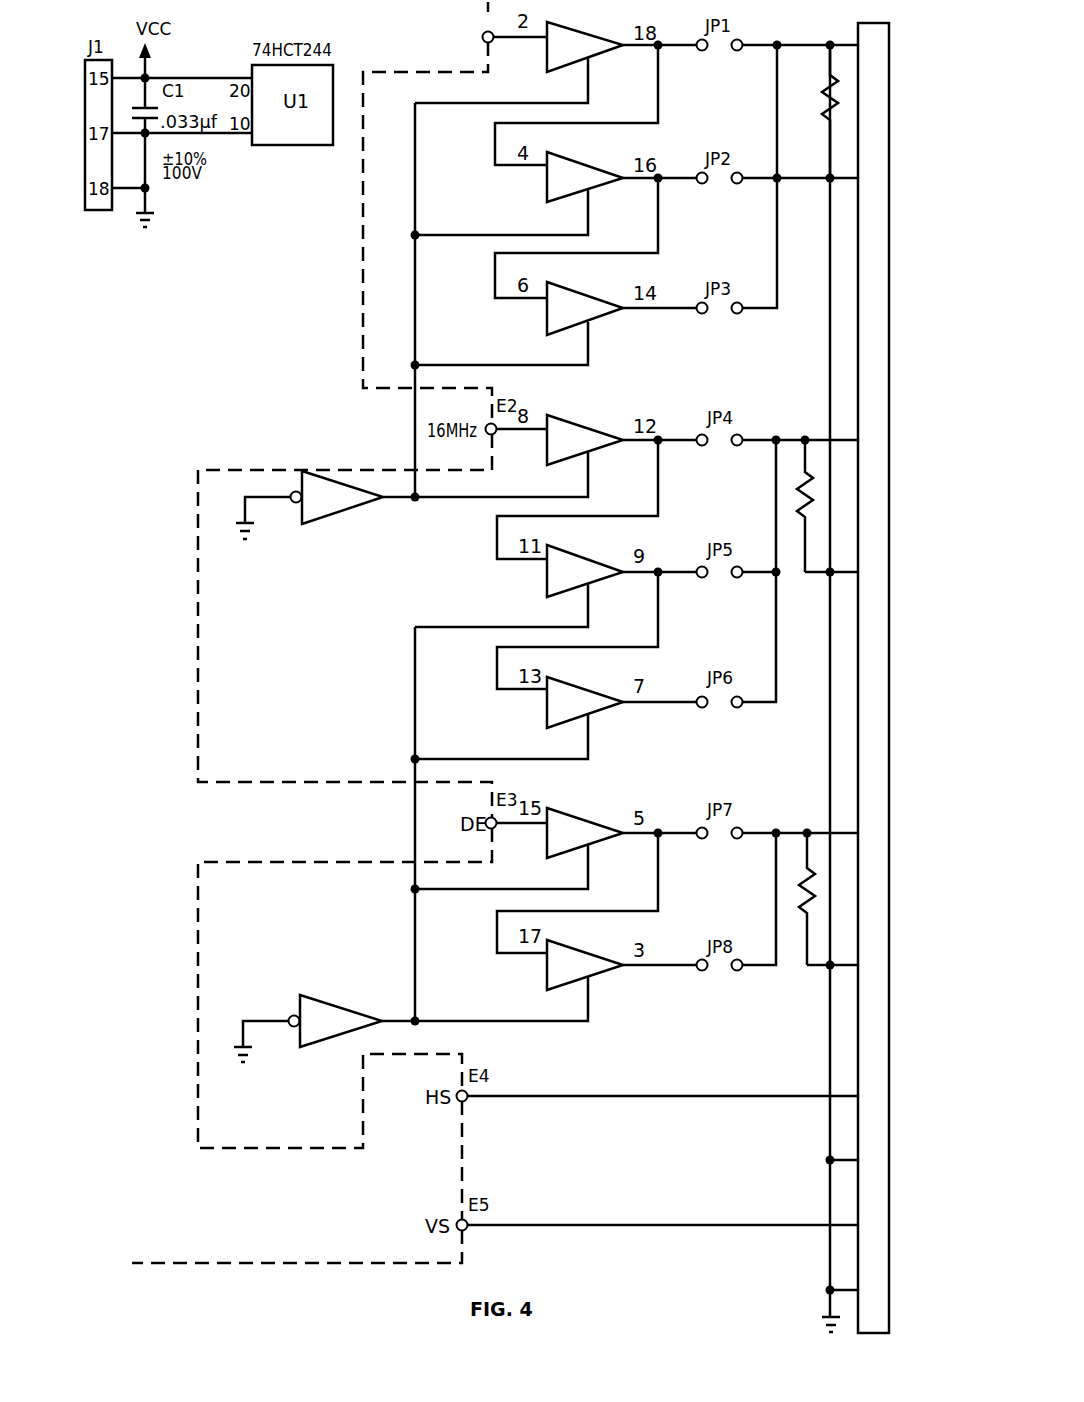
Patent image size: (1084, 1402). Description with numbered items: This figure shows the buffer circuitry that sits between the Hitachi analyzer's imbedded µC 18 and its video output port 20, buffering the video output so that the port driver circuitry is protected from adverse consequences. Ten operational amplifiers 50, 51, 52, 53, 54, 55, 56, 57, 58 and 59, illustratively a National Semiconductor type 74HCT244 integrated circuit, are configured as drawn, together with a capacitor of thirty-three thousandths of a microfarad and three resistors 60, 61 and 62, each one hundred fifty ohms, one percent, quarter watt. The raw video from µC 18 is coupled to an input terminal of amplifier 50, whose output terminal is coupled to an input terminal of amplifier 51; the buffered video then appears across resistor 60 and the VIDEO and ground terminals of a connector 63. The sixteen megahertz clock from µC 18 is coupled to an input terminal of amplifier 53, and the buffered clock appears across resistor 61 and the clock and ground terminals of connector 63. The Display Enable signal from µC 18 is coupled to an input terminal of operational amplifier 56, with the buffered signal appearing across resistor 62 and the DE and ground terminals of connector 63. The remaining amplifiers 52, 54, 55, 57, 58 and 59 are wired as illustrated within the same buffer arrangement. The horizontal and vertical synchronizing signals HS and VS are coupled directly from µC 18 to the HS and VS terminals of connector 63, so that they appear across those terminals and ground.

The imbedded µC 18 is at (228, 392).
The video output port 20 is at (427, 18).
The operational amplifier 50 is at (573, 30).
The operational amplifier 51 is at (578, 163).
The operational amplifier 52 is at (578, 293).
The operational amplifier 53 is at (576, 425).
The operational amplifier 54 is at (345, 514).
The operational amplifier 55 is at (582, 558).
The operational amplifier 56 is at (582, 690).
The operational amplifier 57 is at (578, 819).
The operational amplifier 58 is at (578, 951).
The operational amplifier 59 is at (326, 1004).
The resistor 60 is at (829, 109).
The resistor 61 is at (806, 525).
The resistor 62 is at (802, 925).
The connector 63 is at (841, 31).